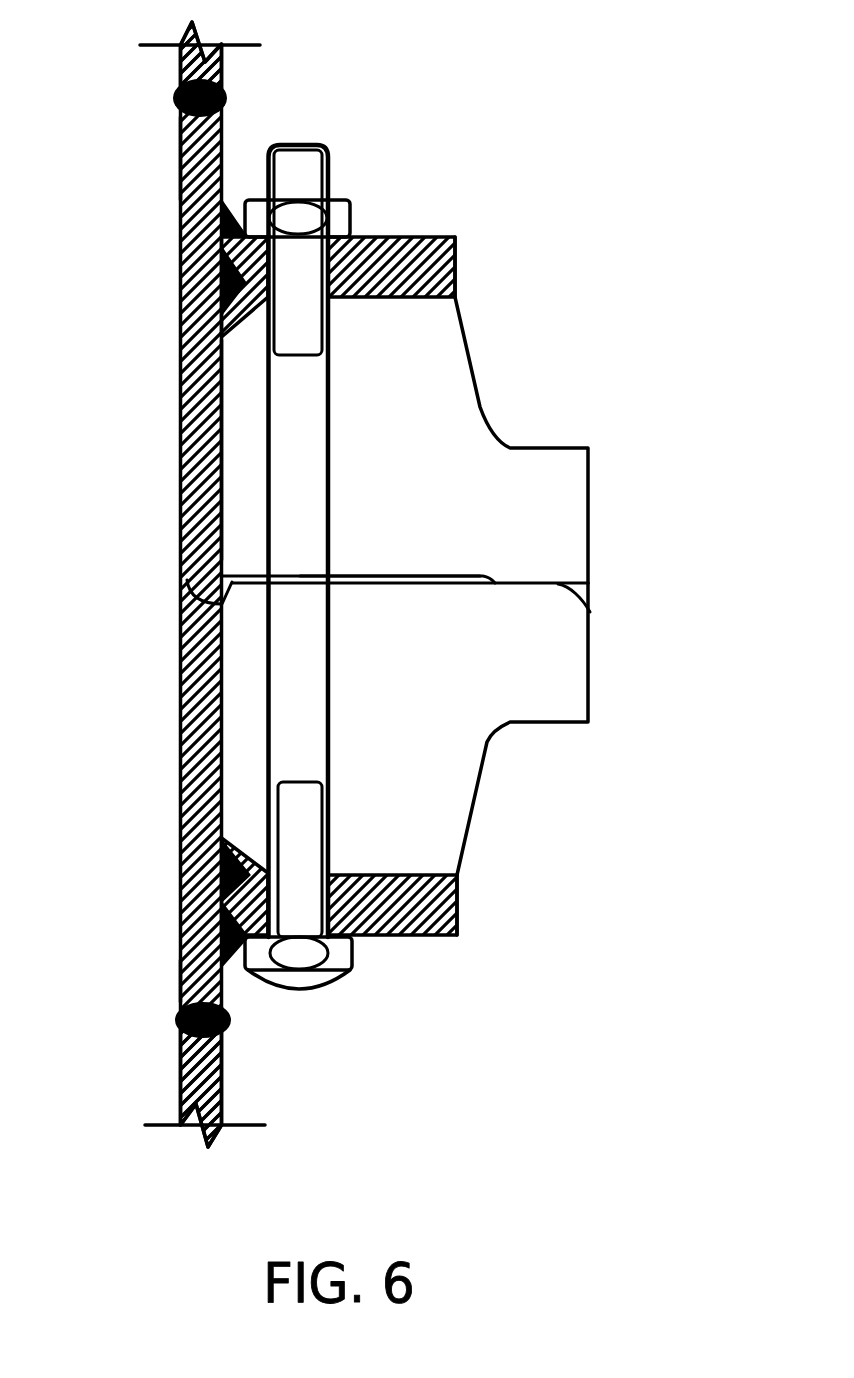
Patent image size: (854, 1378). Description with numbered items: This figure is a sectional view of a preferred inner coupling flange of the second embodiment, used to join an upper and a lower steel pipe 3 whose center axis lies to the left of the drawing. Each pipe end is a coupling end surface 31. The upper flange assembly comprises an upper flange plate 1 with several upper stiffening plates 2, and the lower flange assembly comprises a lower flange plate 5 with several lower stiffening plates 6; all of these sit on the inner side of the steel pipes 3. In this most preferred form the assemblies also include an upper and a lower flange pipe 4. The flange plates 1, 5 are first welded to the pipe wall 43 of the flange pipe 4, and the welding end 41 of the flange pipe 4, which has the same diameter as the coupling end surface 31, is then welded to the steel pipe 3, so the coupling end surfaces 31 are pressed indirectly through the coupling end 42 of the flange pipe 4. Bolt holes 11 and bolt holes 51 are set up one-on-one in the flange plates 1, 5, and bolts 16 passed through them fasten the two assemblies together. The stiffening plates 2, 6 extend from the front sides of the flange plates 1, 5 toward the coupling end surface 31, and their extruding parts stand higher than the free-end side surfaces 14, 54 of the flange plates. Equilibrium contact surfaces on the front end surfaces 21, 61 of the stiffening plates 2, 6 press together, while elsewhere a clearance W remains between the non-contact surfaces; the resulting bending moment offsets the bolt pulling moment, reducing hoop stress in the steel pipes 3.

The upper flange plate 1 is at (428, 237).
The bolt holes 11 is at (350, 233).
The free-end side surface 14 is at (457, 265).
The bolts 16 is at (327, 163).
The upper stiffening plates 2 is at (573, 538).
The front end surface 21 is at (422, 568).
The steel pipe 3 is at (207, 75).
The coupling end surface 31 is at (173, 98).
The flange pipe 4 is at (180, 502).
The welding end 41 is at (176, 140).
The coupling end 42 is at (180, 582).
The surface of mounting plate 43 is at (222, 457).
The lower flange plate 5 is at (413, 923).
The bolt holes 51 is at (333, 912).
The free-end side surface 54 is at (460, 903).
The lower stiffening plates 6 is at (550, 680).
The front end surface 61 is at (432, 594).
The clearance W is at (393, 586).